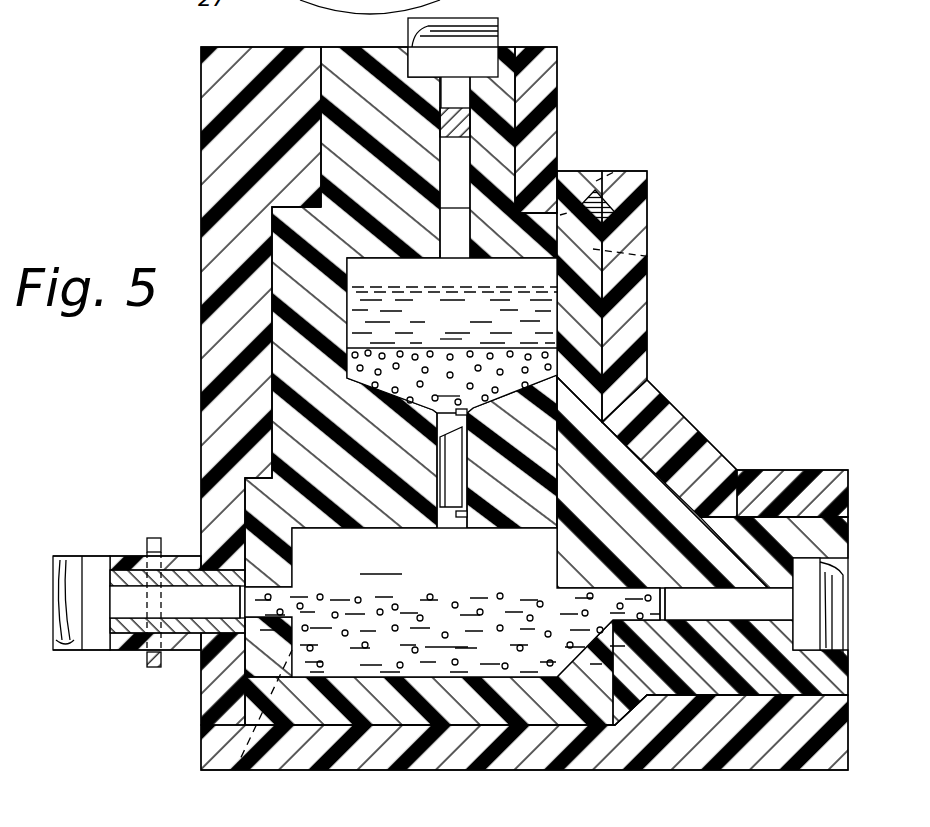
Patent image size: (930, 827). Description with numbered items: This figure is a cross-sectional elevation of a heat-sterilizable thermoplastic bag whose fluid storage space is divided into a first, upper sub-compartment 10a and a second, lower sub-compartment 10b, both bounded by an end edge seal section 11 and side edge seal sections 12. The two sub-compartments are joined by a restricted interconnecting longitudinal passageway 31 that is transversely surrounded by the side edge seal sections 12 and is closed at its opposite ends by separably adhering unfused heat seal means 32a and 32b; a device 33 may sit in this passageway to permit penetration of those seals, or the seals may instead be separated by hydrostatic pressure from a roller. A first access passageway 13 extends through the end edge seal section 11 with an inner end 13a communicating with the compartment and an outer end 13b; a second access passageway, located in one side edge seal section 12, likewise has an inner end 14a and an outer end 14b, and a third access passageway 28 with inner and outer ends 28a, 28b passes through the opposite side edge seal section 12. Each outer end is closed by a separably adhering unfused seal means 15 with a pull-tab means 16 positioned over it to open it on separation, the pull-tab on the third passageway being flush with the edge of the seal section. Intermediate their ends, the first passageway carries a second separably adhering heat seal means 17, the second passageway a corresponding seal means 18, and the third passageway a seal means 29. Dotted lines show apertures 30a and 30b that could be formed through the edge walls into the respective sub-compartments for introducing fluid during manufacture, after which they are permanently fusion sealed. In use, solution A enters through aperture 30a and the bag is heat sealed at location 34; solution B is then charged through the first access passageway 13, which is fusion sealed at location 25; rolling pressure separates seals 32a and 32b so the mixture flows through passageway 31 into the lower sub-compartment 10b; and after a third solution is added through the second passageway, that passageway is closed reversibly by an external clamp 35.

The first sub-compartment 10a is at (557, 272).
The second sub-compartment 10b is at (452, 602).
The end edge seal section 11 is at (231, 150).
The side edge seal section 12 is at (215, 360).
The first access passageway 13 is at (453, 168).
The inner end of first access passageway 13a is at (440, 257).
The outer end of first access passageway 13b is at (453, 92).
The inner end of second access passageway 14a is at (203, 640).
The outer end of second access passageway 14b is at (137, 603).
The separably adhering unfused seal means 15 is at (480, 67).
The pull-tab means 16 is at (497, 42).
The second separably adhering unfused heat seal means 17 is at (453, 200).
The second separably adhering unfused heat seal means 18 is at (240, 597).
The heat seal location 25 is at (453, 127).
The third access passageway 28 is at (742, 603).
The inner end of third access passageway 28a is at (655, 588).
The outer end of third access passageway 28b is at (742, 612).
The second separably adhering unfused heat seal means 29 is at (666, 604).
The aperture 30a is at (628, 222).
The aperture 30b is at (237, 790).
The restricted interconnecting longitudinal passageway 31 is at (443, 428).
The separably adhering unfused heat seal means 32a is at (484, 406).
The separably adhering unfused heat seal means 32b is at (465, 503).
The device 33 is at (453, 467).
The heat sealing location 34 is at (612, 194).
The external clamp 35 is at (147, 548).